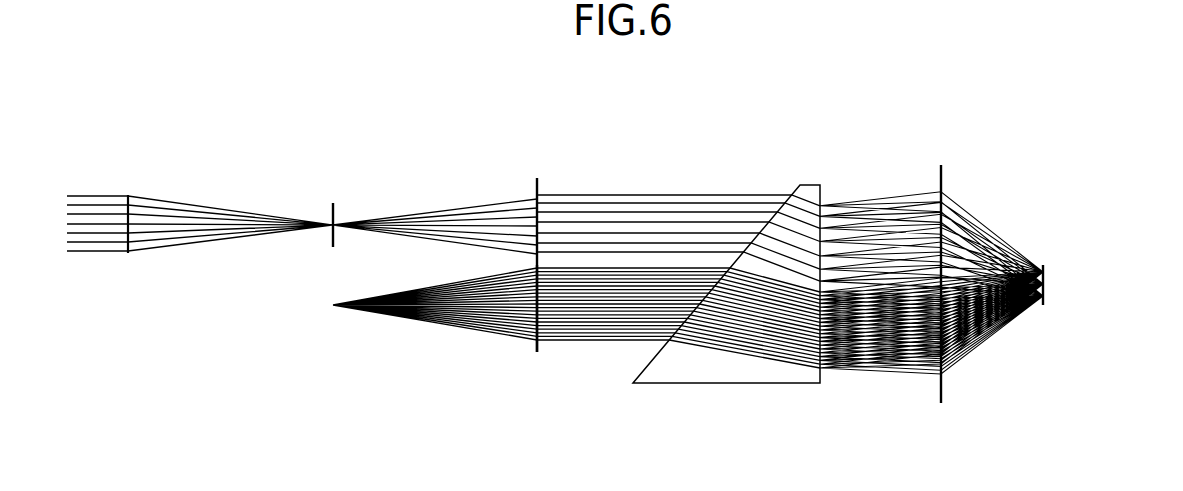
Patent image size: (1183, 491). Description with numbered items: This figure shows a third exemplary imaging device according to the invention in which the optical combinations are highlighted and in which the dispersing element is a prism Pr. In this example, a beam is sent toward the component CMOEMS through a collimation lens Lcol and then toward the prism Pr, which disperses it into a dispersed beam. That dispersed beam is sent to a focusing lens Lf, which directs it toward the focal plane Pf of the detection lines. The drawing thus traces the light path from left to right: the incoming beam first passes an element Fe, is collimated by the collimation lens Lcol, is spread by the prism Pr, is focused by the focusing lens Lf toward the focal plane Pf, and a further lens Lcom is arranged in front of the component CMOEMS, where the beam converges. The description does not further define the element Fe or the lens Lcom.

The entrance slit Fe is at (332, 207).
The field point source Pf is at (330, 305).
The collimating lens Lcol is at (537, 180).
The field lens Lf is at (537, 352).
The dispersing prism Pr is at (703, 373).
The combining lens Lcom is at (942, 385).
The MOEMS component CMOEMS is at (1046, 290).